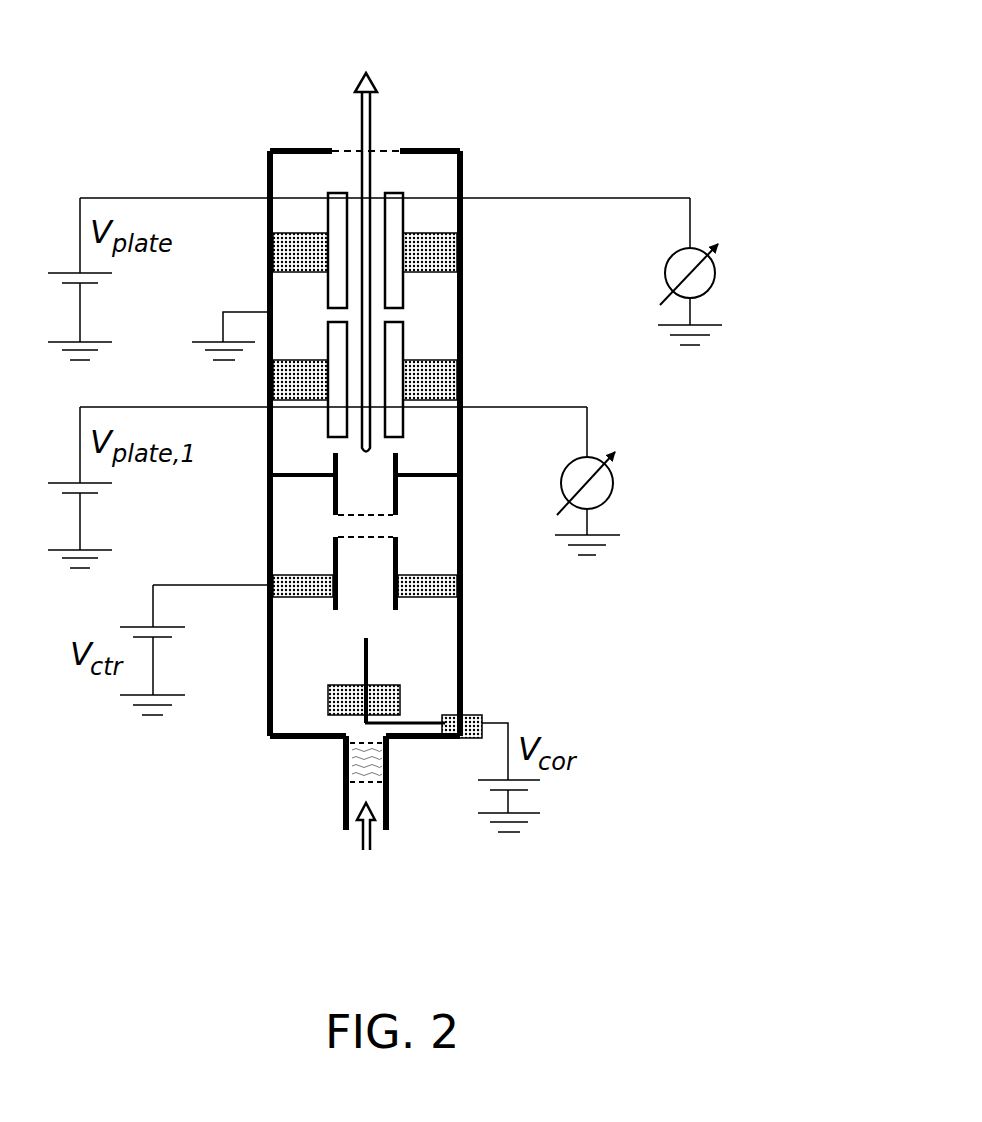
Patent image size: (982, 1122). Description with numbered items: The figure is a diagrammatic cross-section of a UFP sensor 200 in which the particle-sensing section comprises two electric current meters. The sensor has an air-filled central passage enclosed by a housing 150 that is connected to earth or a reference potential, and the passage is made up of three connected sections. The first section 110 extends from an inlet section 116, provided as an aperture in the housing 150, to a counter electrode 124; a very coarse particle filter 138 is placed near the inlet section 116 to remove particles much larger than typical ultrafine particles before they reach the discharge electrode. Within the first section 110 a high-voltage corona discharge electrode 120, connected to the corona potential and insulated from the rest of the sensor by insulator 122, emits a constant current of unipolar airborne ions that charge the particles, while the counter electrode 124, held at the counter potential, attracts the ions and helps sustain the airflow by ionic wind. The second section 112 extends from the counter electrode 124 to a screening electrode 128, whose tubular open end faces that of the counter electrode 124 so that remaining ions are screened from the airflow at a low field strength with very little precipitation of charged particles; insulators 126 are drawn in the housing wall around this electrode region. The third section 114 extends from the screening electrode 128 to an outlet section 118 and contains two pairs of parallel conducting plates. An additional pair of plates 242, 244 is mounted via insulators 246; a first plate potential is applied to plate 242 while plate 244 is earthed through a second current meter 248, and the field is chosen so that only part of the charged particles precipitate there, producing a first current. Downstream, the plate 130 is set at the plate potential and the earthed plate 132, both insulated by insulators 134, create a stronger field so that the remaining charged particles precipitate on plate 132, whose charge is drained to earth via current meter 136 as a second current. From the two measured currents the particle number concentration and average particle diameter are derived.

The UFP sensor 200 is at (448, 420).
The housing 150 is at (472, 613).
The outlet section 118 is at (343, 146).
The first conducting plate 130 is at (320, 209).
The second conducting plate 132 is at (413, 210).
The insulators 134 is at (288, 246).
The third section 114 is at (398, 338).
The first additional conducting plate 242 is at (325, 335).
The second additional conducting plate 244 is at (412, 321).
The insulators 246 is at (288, 378).
The second section 112 is at (413, 471).
The screening electrode 128 is at (404, 496).
The counter electrode 124 is at (409, 602).
The insulator 126 is at (437, 581).
The first section 110 is at (474, 749).
The corona discharge electrode 120 is at (375, 667).
The insulator 122 is at (412, 697).
The coarse particle filter 138 is at (353, 762).
The inlet section 116 is at (351, 836).
The current meter 136 is at (729, 272).
The second current meter 248 is at (622, 483).